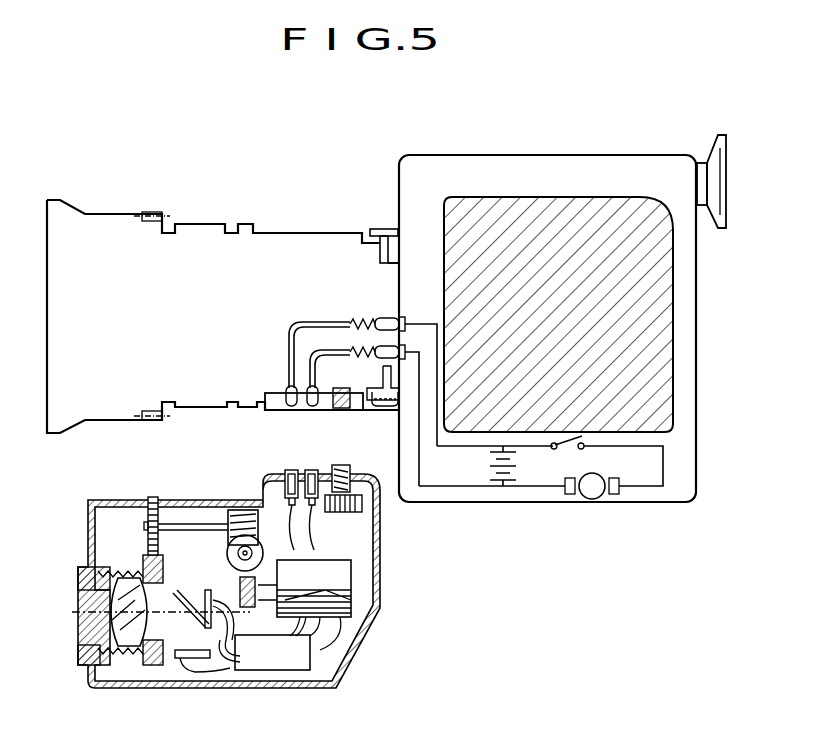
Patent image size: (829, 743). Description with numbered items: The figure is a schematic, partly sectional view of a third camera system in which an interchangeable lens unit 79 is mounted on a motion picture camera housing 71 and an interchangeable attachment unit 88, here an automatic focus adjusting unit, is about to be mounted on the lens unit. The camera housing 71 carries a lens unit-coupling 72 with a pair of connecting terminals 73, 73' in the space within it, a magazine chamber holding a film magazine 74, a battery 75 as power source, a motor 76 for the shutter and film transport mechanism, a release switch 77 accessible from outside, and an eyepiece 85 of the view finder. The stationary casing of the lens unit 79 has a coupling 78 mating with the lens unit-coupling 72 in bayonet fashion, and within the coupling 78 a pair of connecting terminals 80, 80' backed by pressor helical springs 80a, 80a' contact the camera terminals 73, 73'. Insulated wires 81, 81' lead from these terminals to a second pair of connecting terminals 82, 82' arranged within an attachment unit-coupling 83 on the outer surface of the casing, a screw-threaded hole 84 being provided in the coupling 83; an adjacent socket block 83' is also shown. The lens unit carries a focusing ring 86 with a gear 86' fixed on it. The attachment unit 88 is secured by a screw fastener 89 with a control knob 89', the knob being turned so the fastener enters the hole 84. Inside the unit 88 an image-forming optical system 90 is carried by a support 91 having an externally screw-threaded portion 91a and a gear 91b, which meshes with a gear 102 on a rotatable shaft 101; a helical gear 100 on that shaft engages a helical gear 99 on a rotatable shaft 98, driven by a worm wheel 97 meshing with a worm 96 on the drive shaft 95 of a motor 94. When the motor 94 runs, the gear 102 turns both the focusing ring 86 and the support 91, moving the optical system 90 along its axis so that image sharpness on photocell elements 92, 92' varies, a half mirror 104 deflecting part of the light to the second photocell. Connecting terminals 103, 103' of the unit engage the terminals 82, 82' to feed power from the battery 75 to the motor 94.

The camera housing 71 is at (493, 155).
The lens unit-coupling 72 is at (383, 229).
The connecting terminal 73 is at (386, 303).
The connecting terminal 73' is at (411, 318).
The film magazine 74 is at (560, 210).
The battery 75 is at (523, 474).
The motor 76 is at (595, 498).
The release switch 77 is at (573, 436).
The coupling 78 is at (396, 263).
The lens unit 79 is at (326, 197).
The connecting terminal 80 is at (353, 297).
The pressor helical spring 80a is at (335, 311).
The pressor helical spring 80a' is at (352, 373).
The connecting terminal 80' is at (432, 405).
The insulated wire 81 is at (301, 324).
The insulated wire 81' is at (286, 339).
The connecting terminal 82 is at (260, 368).
The connecting terminal 82' is at (301, 419).
The attachment unit-coupling 83 is at (293, 387).
The socket block 83' is at (357, 422).
The screw-threaded hole 84 is at (388, 402).
The eyepiece 85 is at (712, 150).
The focusing ring 86 is at (91, 329).
The gear 86' is at (144, 436).
The attachment unit 88 is at (120, 676).
The screw fastener 89 is at (361, 469).
The control knob 89' is at (381, 521).
The image-forming optical system 90 is at (110, 600).
The support 91 is at (90, 652).
The externally screw-threaded portion 91a is at (152, 666).
The gear 91b is at (96, 666).
The photocell element 92 is at (229, 662).
The photocell element 92' is at (205, 667).
The motor 94 is at (351, 578).
The drive shaft 95 is at (283, 576).
The worm 96 is at (351, 600).
The worm wheel 97 is at (240, 590).
The rotatable shaft 98 is at (216, 582).
The helical gear 99 is at (228, 550).
The helical gear 100 is at (242, 510).
The rotatable shaft 101 is at (195, 524).
The gear 102 is at (152, 497).
The connecting terminal 103 is at (287, 495).
The connecting terminal 103' is at (328, 495).
The half mirror 104 is at (194, 655).